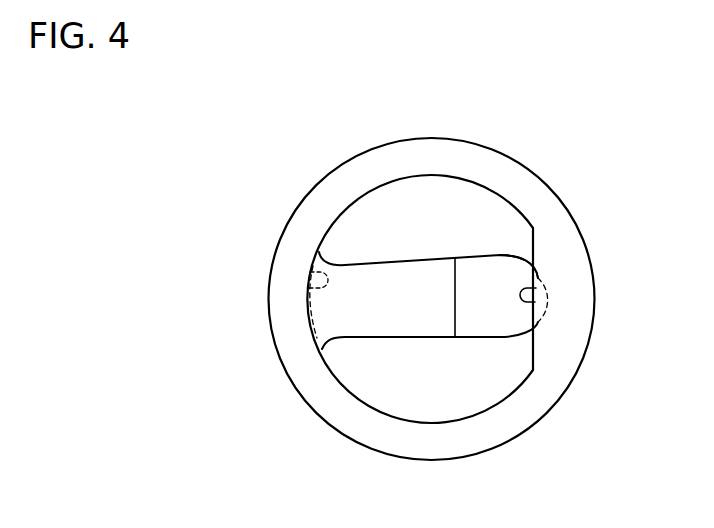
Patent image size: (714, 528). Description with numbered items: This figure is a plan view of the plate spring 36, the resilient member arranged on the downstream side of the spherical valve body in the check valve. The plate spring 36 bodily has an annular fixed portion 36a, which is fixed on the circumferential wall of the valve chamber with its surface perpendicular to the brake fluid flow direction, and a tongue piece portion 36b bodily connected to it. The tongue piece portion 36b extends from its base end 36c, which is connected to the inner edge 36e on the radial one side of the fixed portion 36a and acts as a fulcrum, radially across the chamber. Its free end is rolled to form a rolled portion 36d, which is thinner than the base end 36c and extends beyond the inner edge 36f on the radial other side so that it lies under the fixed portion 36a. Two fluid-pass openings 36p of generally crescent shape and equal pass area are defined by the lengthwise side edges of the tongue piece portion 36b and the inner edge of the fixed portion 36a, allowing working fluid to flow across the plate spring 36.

The plate spring 36 is at (285, 155).
The annular fixed portion 36a is at (530, 195).
The tongue piece portion 36b is at (403, 283).
The base end 36c is at (307, 305).
The rolled portion 36d is at (488, 278).
The inner edge on radial one side 36e is at (310, 270).
The inner edge on radial other side 36f is at (543, 286).
The fluid-pass openings 36p is at (375, 228).